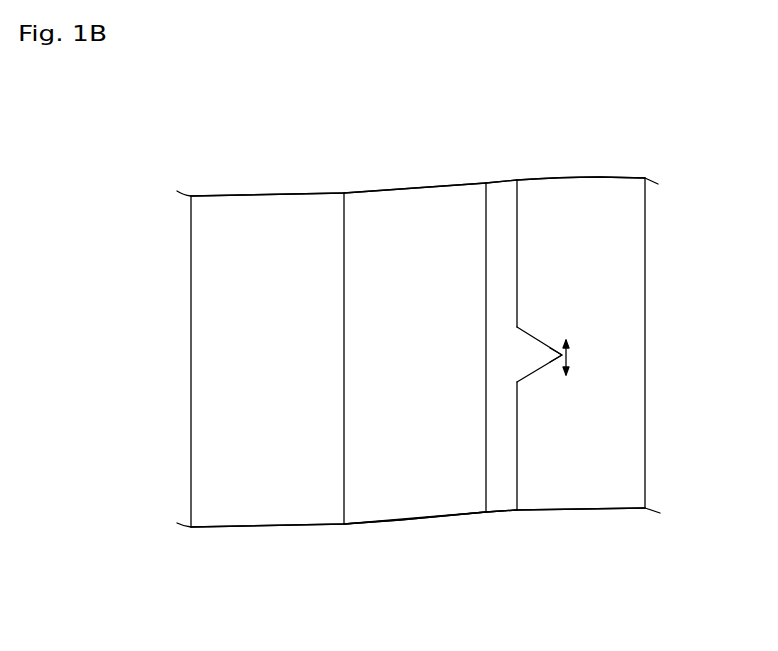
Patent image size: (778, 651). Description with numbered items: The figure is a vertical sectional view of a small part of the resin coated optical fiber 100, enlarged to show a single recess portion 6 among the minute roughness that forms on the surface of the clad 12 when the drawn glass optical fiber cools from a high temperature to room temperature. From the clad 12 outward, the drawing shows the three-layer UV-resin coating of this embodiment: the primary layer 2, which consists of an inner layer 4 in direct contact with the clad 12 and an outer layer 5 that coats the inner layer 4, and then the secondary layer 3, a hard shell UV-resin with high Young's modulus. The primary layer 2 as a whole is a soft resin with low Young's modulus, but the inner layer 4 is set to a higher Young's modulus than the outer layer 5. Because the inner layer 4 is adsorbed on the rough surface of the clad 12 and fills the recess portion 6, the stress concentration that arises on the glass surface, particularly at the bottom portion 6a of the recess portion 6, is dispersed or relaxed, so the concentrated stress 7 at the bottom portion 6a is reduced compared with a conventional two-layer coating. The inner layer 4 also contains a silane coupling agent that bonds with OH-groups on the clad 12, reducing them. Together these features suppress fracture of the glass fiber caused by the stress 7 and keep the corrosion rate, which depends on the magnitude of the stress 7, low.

The resin coated optical fiber 100 is at (628, 108).
The primary layer 2 is at (518, 568).
The secondary layer 3 is at (268, 497).
The inner layer 4 is at (502, 497).
The outer layer 5 is at (398, 497).
The recess portion 6 is at (540, 337).
The bottom portion 6a is at (566, 340).
The stress 7 is at (568, 357).
The clad 12 is at (573, 495).